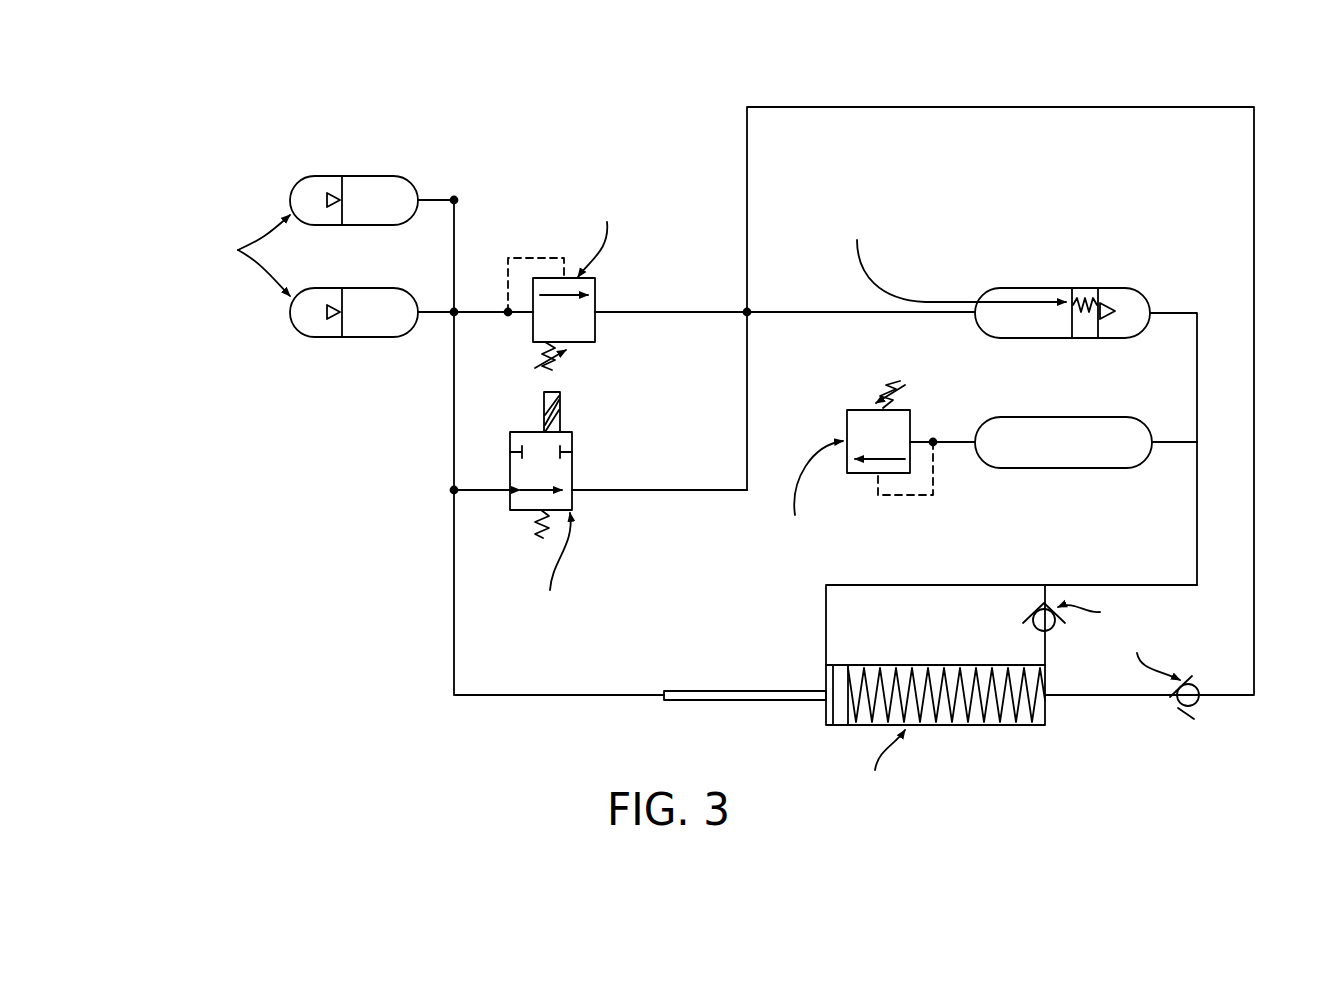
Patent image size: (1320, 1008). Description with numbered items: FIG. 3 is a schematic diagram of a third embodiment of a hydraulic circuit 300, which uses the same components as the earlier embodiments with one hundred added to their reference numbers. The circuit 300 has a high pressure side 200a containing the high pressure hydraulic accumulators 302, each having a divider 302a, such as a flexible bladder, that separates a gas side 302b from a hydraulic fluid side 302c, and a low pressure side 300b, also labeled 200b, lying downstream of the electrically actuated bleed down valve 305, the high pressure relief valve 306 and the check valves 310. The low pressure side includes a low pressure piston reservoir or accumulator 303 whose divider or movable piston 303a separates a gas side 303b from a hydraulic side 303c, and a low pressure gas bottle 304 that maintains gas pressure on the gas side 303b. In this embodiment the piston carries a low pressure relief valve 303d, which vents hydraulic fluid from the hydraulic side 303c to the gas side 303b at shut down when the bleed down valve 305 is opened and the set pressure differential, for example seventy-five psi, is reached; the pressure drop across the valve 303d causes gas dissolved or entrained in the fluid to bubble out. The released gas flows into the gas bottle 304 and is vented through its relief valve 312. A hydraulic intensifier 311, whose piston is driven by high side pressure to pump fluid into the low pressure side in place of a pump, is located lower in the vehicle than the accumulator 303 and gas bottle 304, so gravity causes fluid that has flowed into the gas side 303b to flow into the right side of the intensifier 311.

The hydraulic circuit 300 is at (1158, 55).
The low pressure side 300b is at (797, 47).
The high pressure side 200a is at (313, 402).
The low pressure side 200b is at (470, 742).
The high pressure hydraulic accumulators 302 is at (232, 256).
The divider 302a is at (342, 176).
The gas side 302b is at (297, 194).
The hydraulic fluid side 302c is at (390, 218).
The low pressure piston reservoir 303 is at (1002, 370).
The divider 303a is at (1098, 340).
The gas side 303b is at (1148, 327).
The hydraulic side 303c is at (988, 322).
The low pressure relief valve 303d is at (1082, 316).
The low pressure gas bottle 304 is at (1023, 417).
The bleed down valve 305 is at (573, 446).
The high pressure relief valve 306 is at (596, 292).
The check valves 310 is at (1032, 628).
The hydraulic intensifier 311 is at (1010, 727).
The relief valve 312 is at (855, 410).